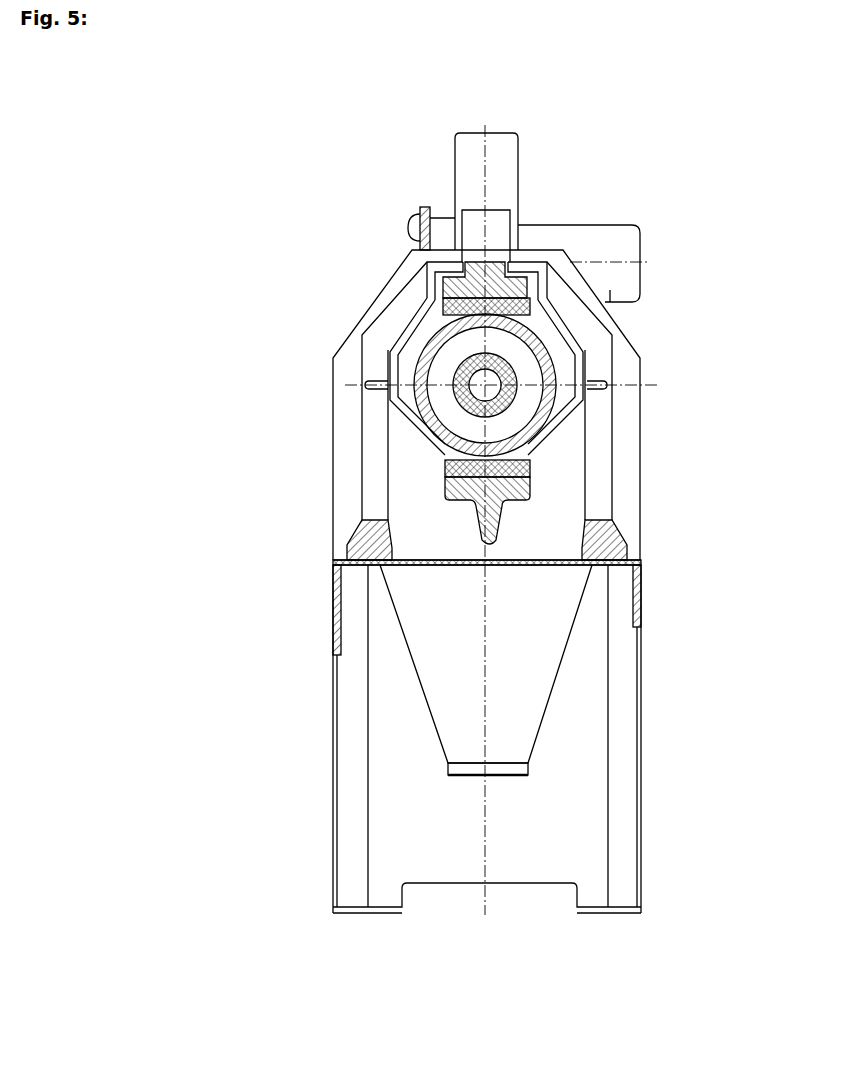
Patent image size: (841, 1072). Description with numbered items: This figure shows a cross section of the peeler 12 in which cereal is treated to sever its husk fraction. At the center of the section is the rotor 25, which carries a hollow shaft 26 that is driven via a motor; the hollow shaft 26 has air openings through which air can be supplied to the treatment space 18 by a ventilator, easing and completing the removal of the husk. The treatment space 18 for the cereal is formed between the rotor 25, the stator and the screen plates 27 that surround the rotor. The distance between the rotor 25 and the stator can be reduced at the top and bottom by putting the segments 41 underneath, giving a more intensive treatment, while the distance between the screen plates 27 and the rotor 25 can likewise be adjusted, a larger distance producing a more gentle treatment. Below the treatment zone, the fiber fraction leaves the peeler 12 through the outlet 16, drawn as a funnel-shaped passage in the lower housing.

The peeler 12 is at (276, 208).
The outlet 16 is at (537, 738).
The treatment space 18 is at (553, 413).
The rotor 25 is at (548, 352).
The hollow shaft 26 is at (515, 382).
The screen plates 27 is at (410, 328).
The segments 41 is at (520, 297).